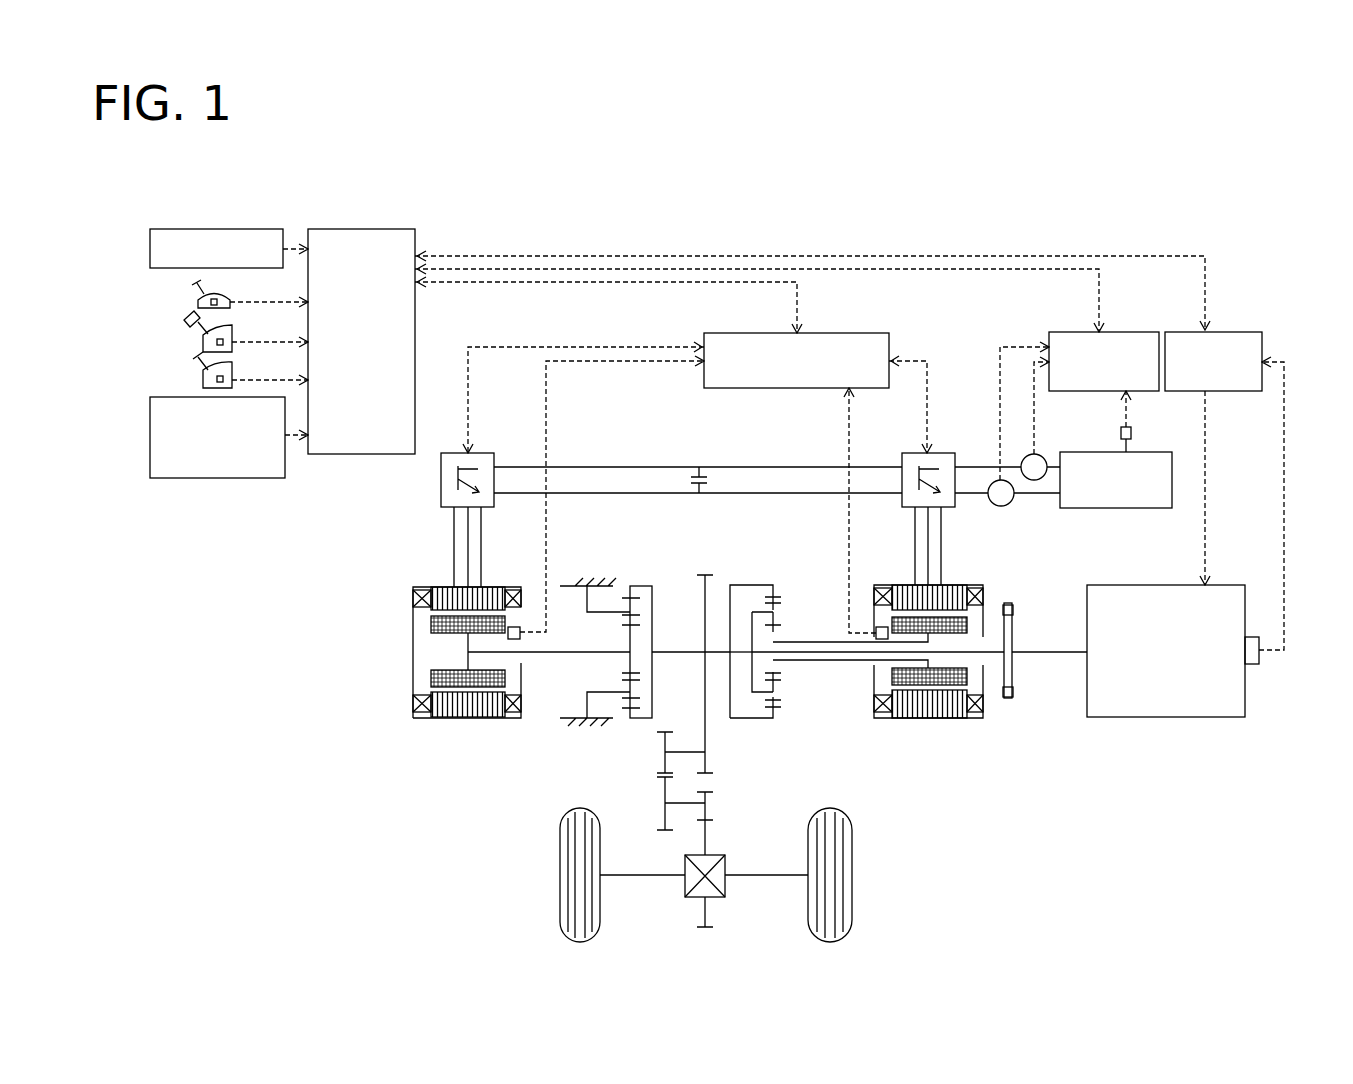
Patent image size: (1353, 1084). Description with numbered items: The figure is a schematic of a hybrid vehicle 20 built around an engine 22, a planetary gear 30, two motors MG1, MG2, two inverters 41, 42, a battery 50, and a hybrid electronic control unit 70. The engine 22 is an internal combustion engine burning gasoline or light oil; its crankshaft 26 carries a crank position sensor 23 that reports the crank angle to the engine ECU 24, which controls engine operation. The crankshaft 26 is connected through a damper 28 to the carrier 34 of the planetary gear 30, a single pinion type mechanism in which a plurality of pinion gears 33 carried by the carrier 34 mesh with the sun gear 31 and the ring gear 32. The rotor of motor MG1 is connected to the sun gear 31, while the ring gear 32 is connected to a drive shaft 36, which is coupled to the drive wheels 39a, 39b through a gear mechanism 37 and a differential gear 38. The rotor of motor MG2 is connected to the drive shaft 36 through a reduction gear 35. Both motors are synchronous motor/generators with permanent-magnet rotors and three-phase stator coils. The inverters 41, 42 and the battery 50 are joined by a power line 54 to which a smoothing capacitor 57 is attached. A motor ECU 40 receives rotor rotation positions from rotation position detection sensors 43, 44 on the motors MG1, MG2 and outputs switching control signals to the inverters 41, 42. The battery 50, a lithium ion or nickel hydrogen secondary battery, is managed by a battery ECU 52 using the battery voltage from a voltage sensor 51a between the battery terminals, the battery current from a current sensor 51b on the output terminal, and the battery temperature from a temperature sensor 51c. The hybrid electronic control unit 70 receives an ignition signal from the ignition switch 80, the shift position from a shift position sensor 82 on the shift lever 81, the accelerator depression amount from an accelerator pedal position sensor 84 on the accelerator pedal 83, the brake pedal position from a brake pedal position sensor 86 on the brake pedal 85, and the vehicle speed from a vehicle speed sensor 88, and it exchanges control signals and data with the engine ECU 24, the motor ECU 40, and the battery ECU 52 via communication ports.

The hybrid vehicle 20 is at (940, 200).
The engine 22 is at (1162, 585).
The crank position sensor 23 is at (1252, 664).
The engine ECU 24 is at (1225, 332).
The crankshaft 26 is at (1047, 652).
The damper 28 is at (1008, 698).
The planetary gear 30 is at (776, 572).
The sun gear 31 is at (775, 668).
The ring gear 32 is at (775, 710).
The pinion gears 33 is at (775, 688).
The carrier 34 is at (755, 640).
The reduction gear 35 is at (645, 585).
The drive shaft 36 is at (672, 651).
The gear mechanism 37 is at (640, 762).
The differential gear 38 is at (685, 868).
The drive wheel 39a is at (560, 875).
The drive wheel 39b is at (852, 875).
The motor ECU 40 is at (843, 333).
The inverter 41 is at (940, 453).
The inverter 42 is at (480, 453).
The rotation position detection sensor 43 is at (880, 627).
The rotation position detection sensor 44 is at (513, 627).
The battery 50 is at (1092, 452).
The voltage sensor 51a is at (998, 507).
The current sensor 51b is at (1036, 481).
The temperature sensor 51c is at (1132, 433).
The battery ECU 52 is at (1118, 332).
The power line 54 is at (780, 490).
The smoothing capacitor 57 is at (702, 467).
The hybrid electronic control unit 70 is at (362, 229).
The ignition switch 80 is at (150, 249).
The shift lever 81 is at (196, 288).
The shift position sensor 82 is at (198, 303).
The accelerator pedal 83 is at (190, 328).
The accelerator pedal position sensor 84 is at (203, 345).
The brake pedal 85 is at (200, 371).
The brake pedal position sensor 86 is at (205, 383).
The vehicle speed sensor 88 is at (150, 435).
The motor MG1 is at (955, 718).
The motor MG2 is at (468, 718).